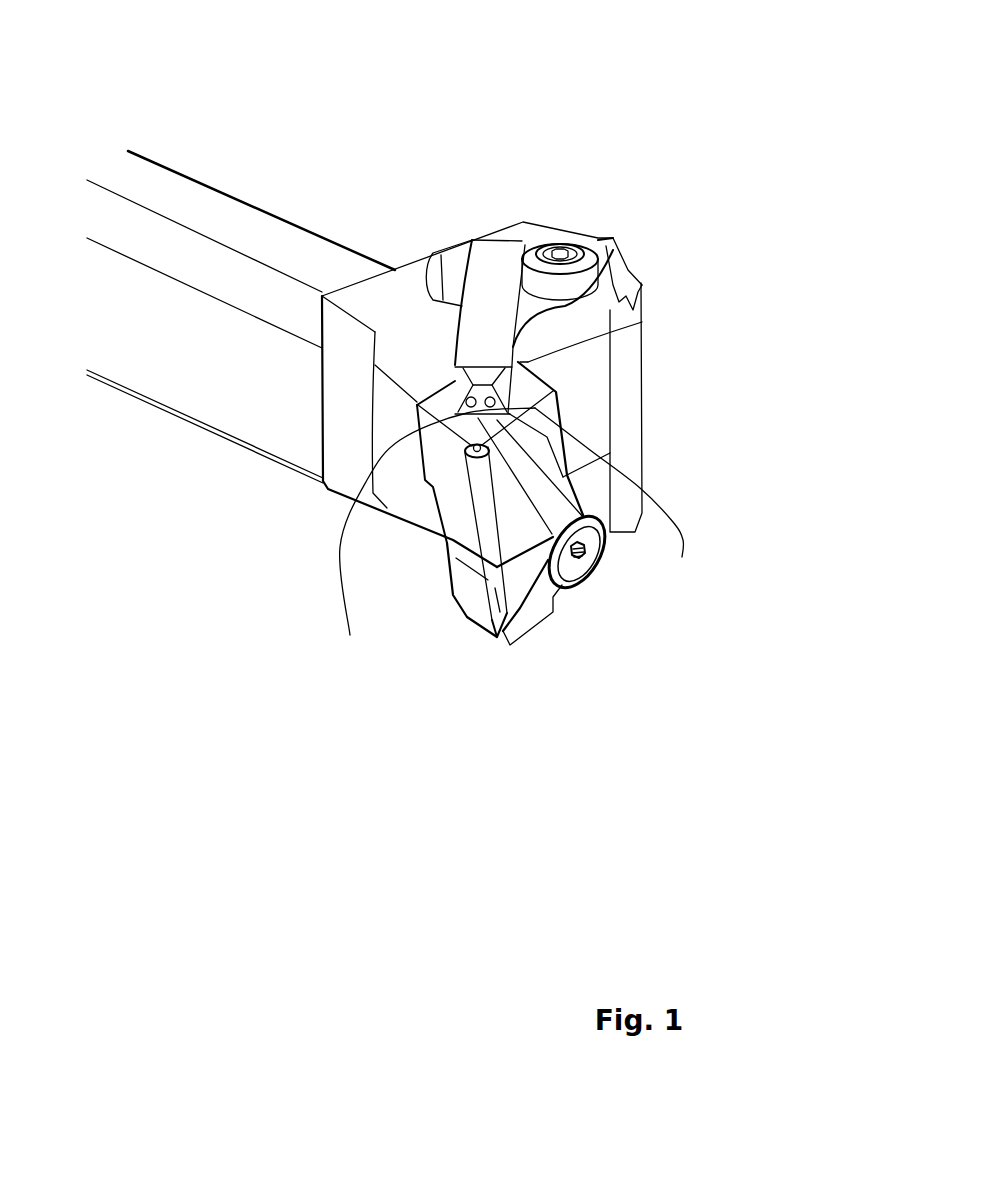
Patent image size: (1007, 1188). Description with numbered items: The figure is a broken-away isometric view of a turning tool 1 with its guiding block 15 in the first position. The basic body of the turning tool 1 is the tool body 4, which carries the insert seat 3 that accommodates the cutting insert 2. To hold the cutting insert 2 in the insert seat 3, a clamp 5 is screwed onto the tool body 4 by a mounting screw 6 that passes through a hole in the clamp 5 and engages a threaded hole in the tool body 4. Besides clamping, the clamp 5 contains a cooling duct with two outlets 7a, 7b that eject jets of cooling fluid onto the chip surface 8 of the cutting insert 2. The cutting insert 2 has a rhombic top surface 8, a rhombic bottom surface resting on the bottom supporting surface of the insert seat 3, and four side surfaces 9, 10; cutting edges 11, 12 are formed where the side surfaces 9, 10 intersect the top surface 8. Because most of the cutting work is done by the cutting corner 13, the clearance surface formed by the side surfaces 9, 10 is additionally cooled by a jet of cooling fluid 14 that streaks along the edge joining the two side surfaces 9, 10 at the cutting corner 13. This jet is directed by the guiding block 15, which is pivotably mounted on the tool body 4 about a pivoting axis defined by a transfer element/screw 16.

The turning tool 1 is at (597, 165).
The cutting insert 2 is at (432, 428).
The insert seat 3 is at (572, 415).
The tool body 4 is at (180, 410).
The clamp 5 is at (492, 295).
The mounting screw 6 is at (585, 257).
The outlet 7a is at (437, 538).
The outlet 7b is at (627, 482).
The chip surface 8 is at (607, 545).
The side surface 9 is at (456, 443).
The side surface 10 is at (578, 570).
The cutting edge 11 is at (427, 527).
The cutting edge 12 is at (545, 392).
The cutting corner 13 is at (495, 642).
The jet of cooling fluid 14 is at (502, 640).
The guiding block 15 is at (535, 615).
The transfer element/screw 16 is at (590, 580).